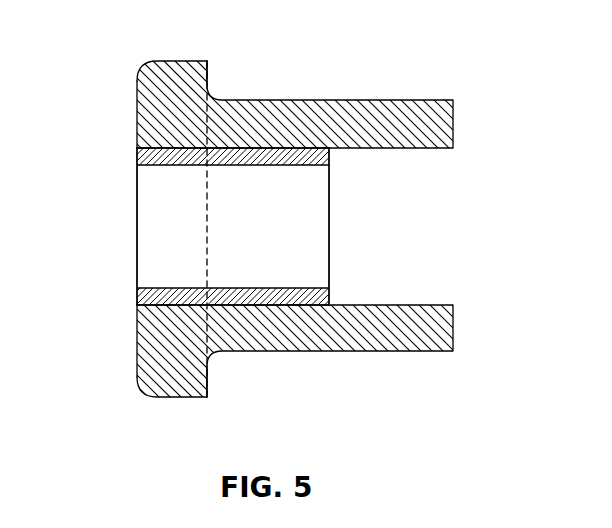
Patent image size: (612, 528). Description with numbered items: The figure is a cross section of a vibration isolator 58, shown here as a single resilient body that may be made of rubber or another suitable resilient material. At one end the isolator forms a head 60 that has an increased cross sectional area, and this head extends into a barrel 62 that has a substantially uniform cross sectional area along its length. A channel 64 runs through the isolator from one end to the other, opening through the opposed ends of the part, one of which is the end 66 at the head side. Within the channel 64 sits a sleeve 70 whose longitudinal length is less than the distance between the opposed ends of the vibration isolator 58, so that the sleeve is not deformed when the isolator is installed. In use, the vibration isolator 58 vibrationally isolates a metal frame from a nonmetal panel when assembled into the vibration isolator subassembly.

The vibration isolator 58 is at (352, 100).
The head 60 is at (208, 73).
The barrel 62 is at (357, 352).
The channel 64 is at (350, 305).
The opposed end 66 is at (137, 335).
The sleeve 70 is at (158, 165).